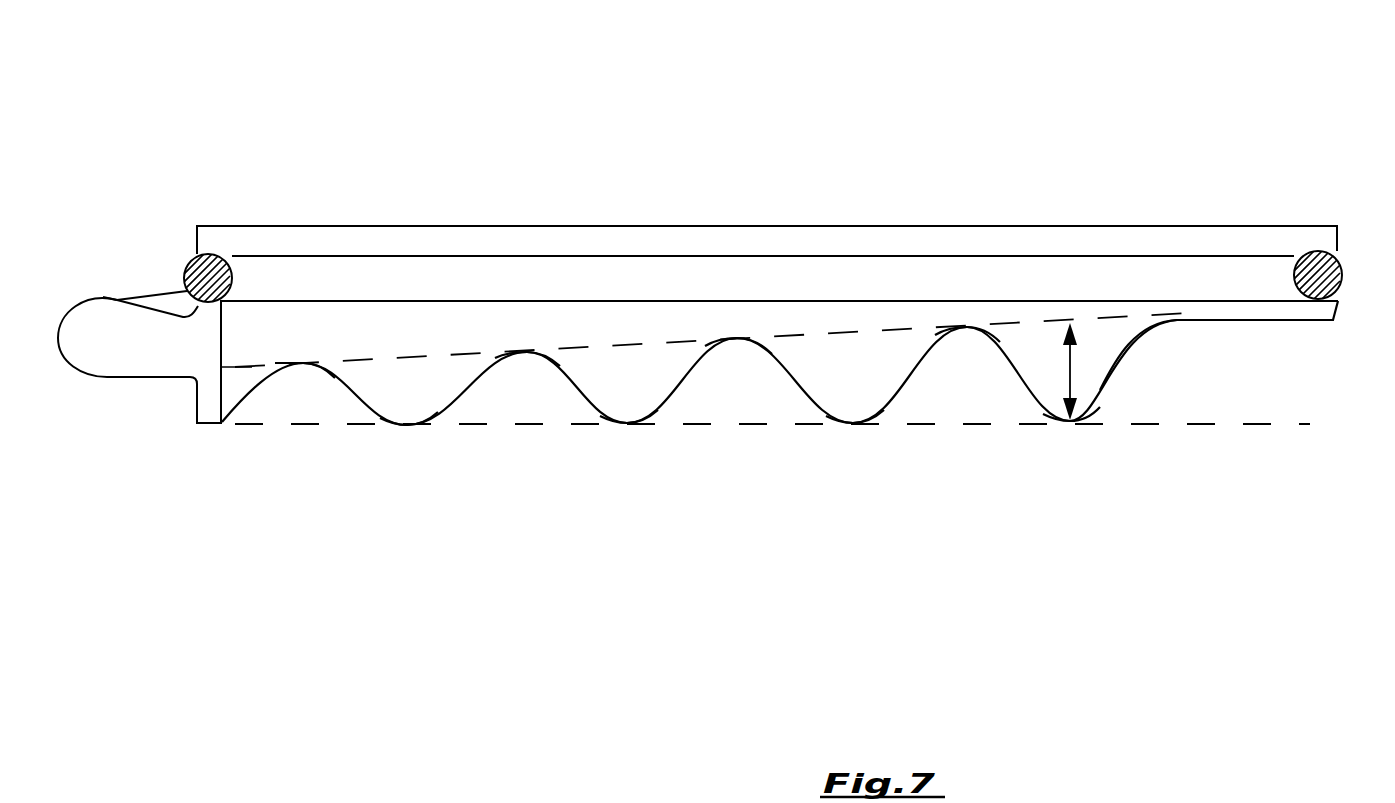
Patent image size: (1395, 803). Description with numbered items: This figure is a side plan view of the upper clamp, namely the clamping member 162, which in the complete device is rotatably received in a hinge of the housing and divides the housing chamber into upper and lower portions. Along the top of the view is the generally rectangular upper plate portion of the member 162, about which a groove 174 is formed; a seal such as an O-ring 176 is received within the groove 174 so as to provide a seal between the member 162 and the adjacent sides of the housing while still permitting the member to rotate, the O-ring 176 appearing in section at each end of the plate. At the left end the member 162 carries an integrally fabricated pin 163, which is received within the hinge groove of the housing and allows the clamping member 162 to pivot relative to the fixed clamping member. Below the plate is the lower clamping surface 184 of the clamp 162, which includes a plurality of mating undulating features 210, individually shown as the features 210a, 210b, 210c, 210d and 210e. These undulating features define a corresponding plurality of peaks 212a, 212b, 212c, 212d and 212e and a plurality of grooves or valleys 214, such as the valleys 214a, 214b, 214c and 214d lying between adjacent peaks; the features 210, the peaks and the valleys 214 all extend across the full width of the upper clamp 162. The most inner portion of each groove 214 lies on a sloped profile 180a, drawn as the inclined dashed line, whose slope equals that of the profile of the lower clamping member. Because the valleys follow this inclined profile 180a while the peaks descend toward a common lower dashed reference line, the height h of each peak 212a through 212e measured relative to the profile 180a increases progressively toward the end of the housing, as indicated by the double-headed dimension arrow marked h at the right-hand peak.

The clamping member 162 is at (659, 205).
The groove 174 is at (915, 257).
The O-ring 176 is at (1347, 265).
The pin 163 is at (148, 353).
The undulating features 210 is at (285, 331).
The grooves or valleys 214 is at (315, 342).
The undulating feature 210a is at (243, 363).
The undulating feature 210b is at (405, 397).
The undulating feature 210c is at (625, 410).
The undulating feature 210d is at (865, 393).
The undulating feature 210e is at (1080, 377).
The peak 212a is at (233, 403).
The peak 212b is at (417, 400).
The peak 212c is at (632, 425).
The peak 212d is at (847, 407).
The peak 212e is at (1090, 390).
The groove or valley 214a is at (303, 407).
The groove or valley 214b is at (507, 377).
The groove or valley 214c is at (737, 360).
The groove or valley 214d is at (970, 343).
The sloped profile 180a is at (703, 333).
The lower clamping surface 184 is at (536, 397).
The height h is at (1063, 367).